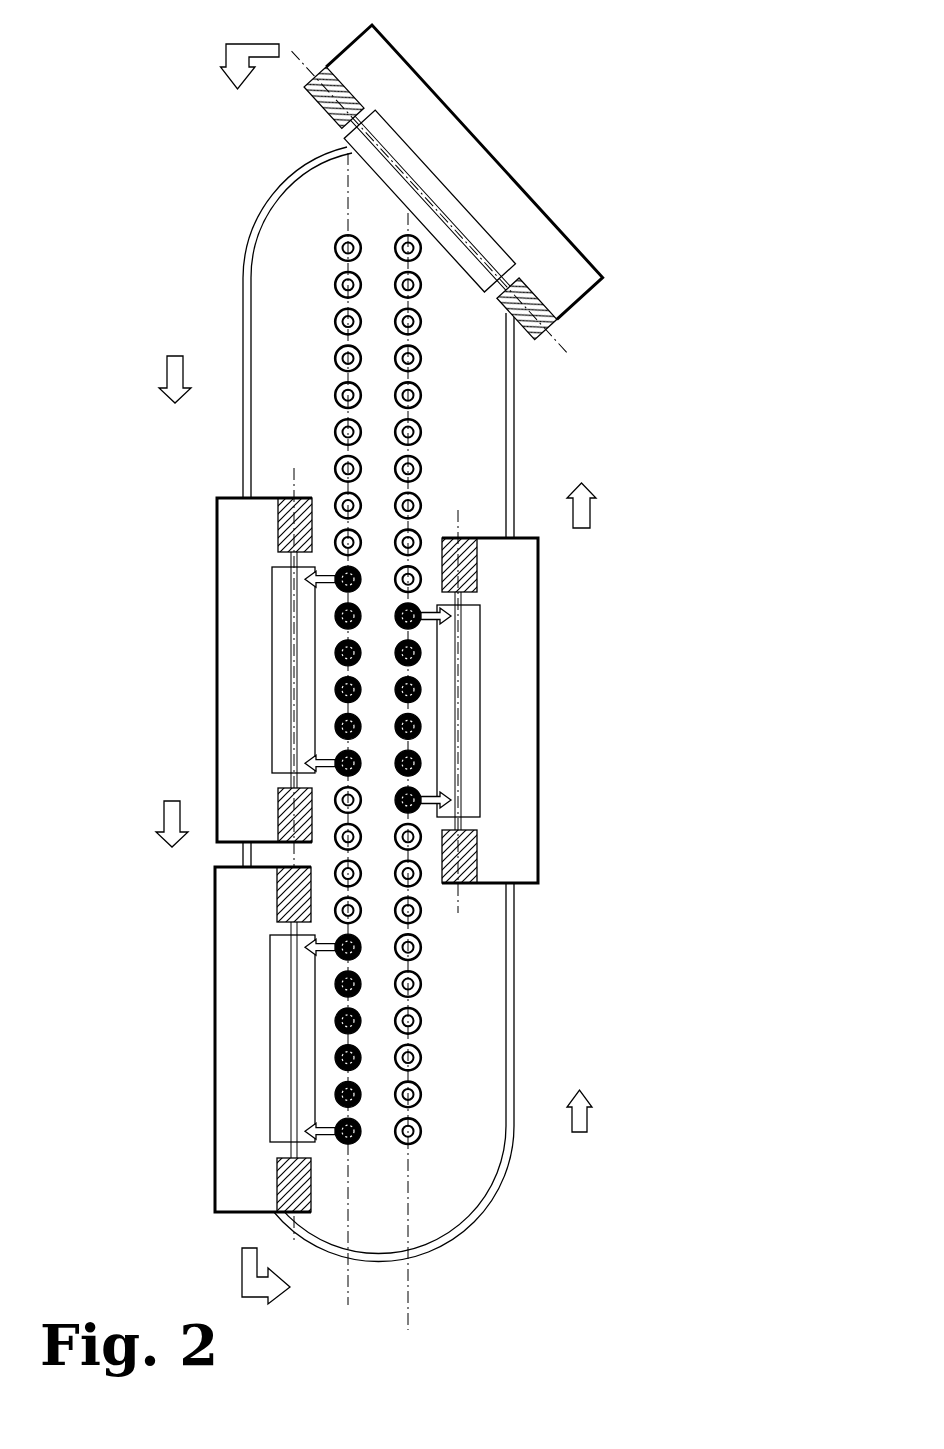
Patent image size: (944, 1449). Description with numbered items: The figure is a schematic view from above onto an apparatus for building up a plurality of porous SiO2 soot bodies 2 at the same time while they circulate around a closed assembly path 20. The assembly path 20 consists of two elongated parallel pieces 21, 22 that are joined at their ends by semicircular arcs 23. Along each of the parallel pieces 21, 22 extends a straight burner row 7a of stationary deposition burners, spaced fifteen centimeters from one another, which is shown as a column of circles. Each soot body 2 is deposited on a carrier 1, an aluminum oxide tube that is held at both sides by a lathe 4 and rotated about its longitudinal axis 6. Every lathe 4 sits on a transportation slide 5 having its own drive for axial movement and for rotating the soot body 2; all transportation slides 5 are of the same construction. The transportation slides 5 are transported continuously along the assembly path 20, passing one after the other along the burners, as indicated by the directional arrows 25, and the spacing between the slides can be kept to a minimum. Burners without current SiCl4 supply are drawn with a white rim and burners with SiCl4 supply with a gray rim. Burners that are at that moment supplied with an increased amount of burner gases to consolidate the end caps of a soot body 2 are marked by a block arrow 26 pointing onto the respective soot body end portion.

The carrier 1 is at (458, 710).
The soot body 2 is at (538, 723).
The lathe 4 is at (477, 562).
The transportation slide 5 is at (377, 620).
The longitudinal axis 6 is at (458, 893).
The burner row 7a is at (333, 363).
The assembly path 20 is at (376, 708).
The parallel piece 21 is at (507, 960).
The parallel piece 22 is at (247, 472).
The semicircular arcs 23 is at (292, 181).
The directional arrows 25 is at (218, 53).
The block arrow 26 is at (308, 952).